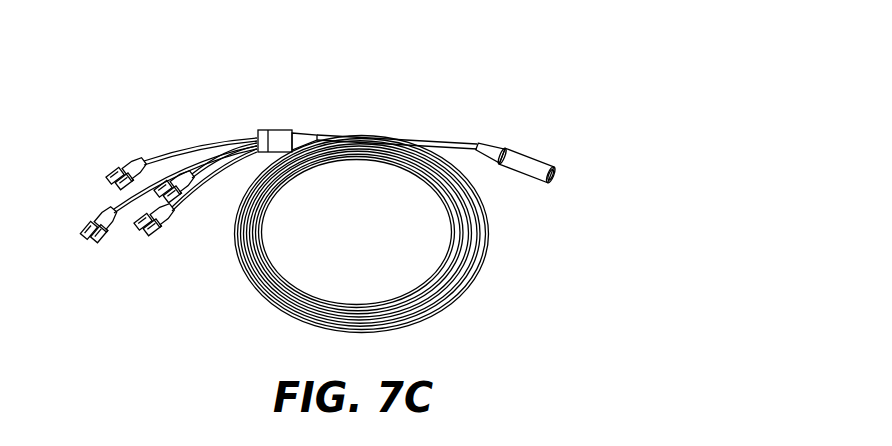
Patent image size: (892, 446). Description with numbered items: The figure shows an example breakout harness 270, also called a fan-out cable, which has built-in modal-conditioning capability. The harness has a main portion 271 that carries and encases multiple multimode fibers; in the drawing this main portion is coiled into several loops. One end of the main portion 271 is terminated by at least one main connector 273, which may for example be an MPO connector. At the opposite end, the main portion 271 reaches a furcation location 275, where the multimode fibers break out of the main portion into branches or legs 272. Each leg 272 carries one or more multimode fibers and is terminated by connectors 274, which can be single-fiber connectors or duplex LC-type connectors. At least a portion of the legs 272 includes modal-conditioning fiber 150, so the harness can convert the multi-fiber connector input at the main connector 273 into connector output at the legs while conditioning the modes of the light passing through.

The breakout harness 270 is at (456, 70).
The main portion 271 is at (352, 133).
The legs 272 is at (191, 222).
The main connector 273 is at (532, 163).
The connectors 274 is at (107, 197).
The furcation location 275 is at (278, 130).
The modal-conditioning fiber 150 is at (215, 155).